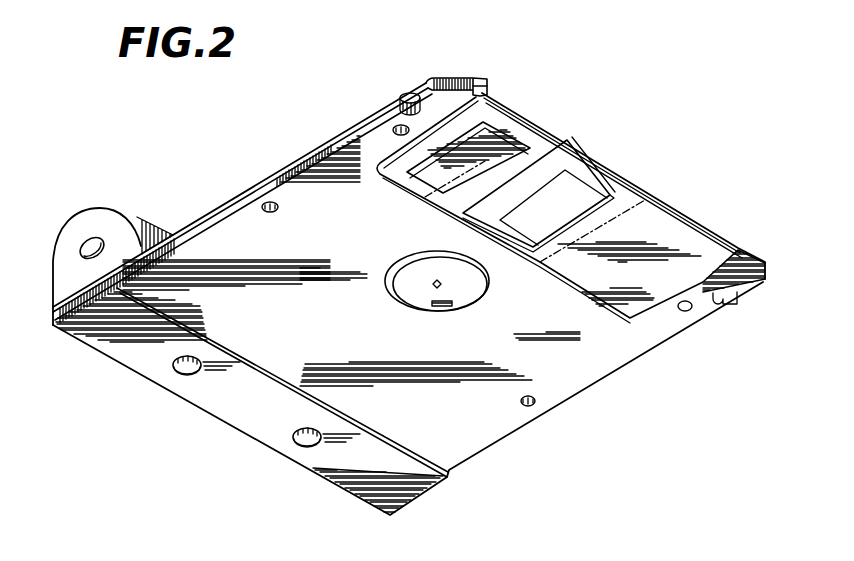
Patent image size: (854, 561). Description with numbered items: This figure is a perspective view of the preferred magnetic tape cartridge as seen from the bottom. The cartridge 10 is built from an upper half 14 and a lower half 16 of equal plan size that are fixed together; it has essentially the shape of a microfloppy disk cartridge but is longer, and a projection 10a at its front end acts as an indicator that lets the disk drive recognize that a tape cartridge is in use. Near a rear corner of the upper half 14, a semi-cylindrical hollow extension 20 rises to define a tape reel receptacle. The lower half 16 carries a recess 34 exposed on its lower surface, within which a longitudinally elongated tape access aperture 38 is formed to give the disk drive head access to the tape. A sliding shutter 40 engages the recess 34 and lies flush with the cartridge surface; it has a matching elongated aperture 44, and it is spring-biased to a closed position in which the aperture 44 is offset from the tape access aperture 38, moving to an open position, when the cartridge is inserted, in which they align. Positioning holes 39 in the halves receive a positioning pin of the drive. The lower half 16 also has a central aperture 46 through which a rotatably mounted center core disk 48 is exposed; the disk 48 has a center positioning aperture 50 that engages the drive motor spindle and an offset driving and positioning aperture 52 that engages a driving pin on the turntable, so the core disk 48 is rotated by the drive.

The cartridge 10 is at (302, 146).
The projection 10a is at (489, 82).
The upper half 14 is at (226, 203).
The lower half 16 is at (238, 210).
The semi-cylindrical hollow extension 20 is at (112, 216).
The recess 34 is at (420, 175).
The tape access aperture 38 is at (608, 207).
The positioning holes 39 is at (395, 130).
The sliding shutter 40 is at (668, 232).
The aperture 44 is at (596, 190).
The central aperture 46 is at (489, 284).
The center core disk 48 is at (459, 283).
The center positioning aperture 50 is at (434, 281).
The driving and positioning aperture 52 is at (442, 308).